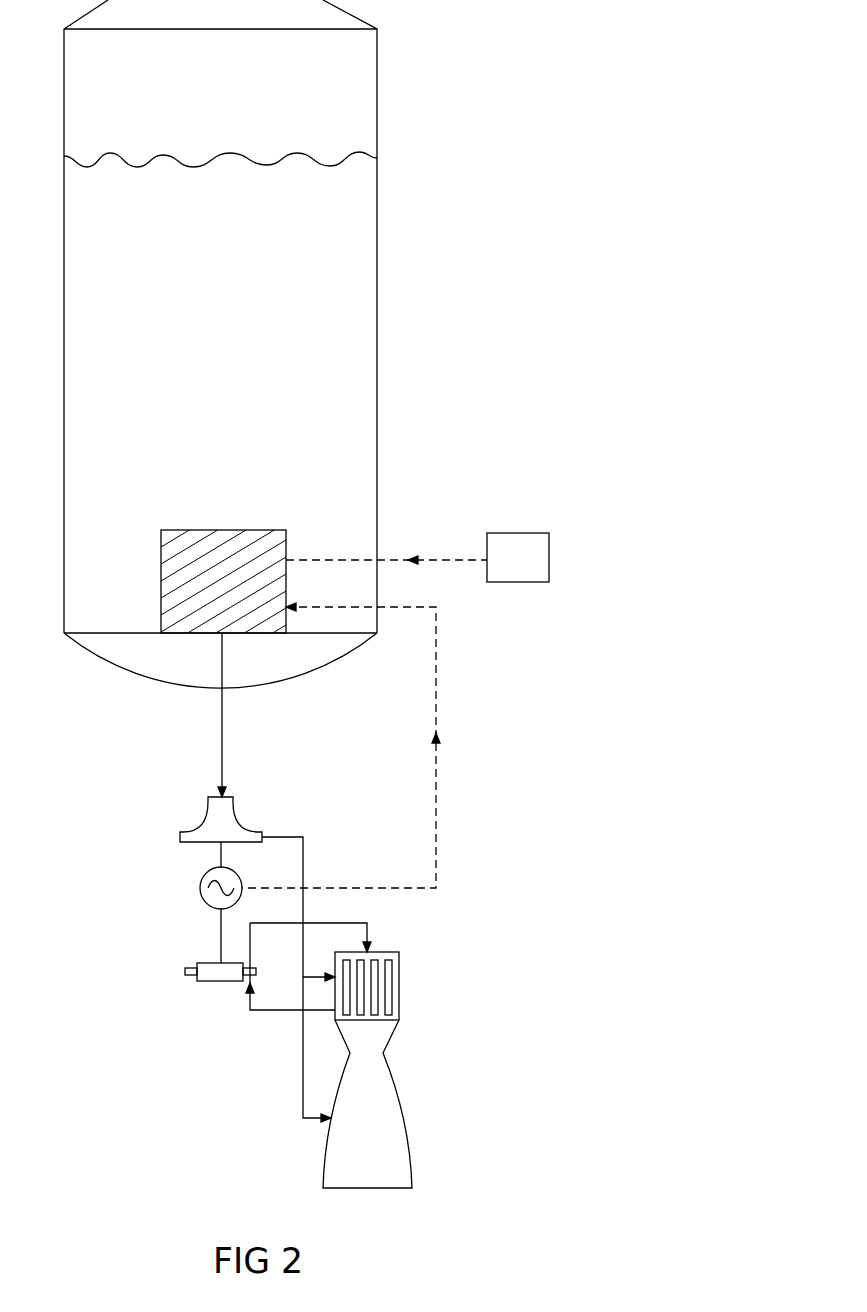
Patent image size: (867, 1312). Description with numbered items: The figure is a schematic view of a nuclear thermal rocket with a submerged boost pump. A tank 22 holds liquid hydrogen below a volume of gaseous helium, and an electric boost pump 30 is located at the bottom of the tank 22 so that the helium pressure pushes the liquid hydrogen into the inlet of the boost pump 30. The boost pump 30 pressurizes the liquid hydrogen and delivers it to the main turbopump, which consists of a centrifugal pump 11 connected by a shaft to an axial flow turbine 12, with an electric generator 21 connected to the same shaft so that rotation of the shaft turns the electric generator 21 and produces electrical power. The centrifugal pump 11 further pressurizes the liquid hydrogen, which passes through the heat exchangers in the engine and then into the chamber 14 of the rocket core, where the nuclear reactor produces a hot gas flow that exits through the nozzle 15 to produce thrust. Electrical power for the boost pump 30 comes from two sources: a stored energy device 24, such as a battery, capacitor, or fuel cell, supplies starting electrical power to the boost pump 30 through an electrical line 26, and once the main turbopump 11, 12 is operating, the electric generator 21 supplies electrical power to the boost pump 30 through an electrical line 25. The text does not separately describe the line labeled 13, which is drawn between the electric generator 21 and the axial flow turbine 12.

The centrifugal pump 11 is at (213, 822).
The axial flow turbine 12 is at (212, 975).
The pipe 13 is at (220, 930).
The chamber 14 is at (372, 982).
The nozzle 15 is at (375, 1135).
The electric generator 21 is at (208, 885).
The tank 22 is at (290, 320).
The stored energy device 24 is at (530, 554).
The electrical line 25 is at (436, 780).
The electrical line 26 is at (393, 560).
The electric boost pump 30 is at (215, 568).